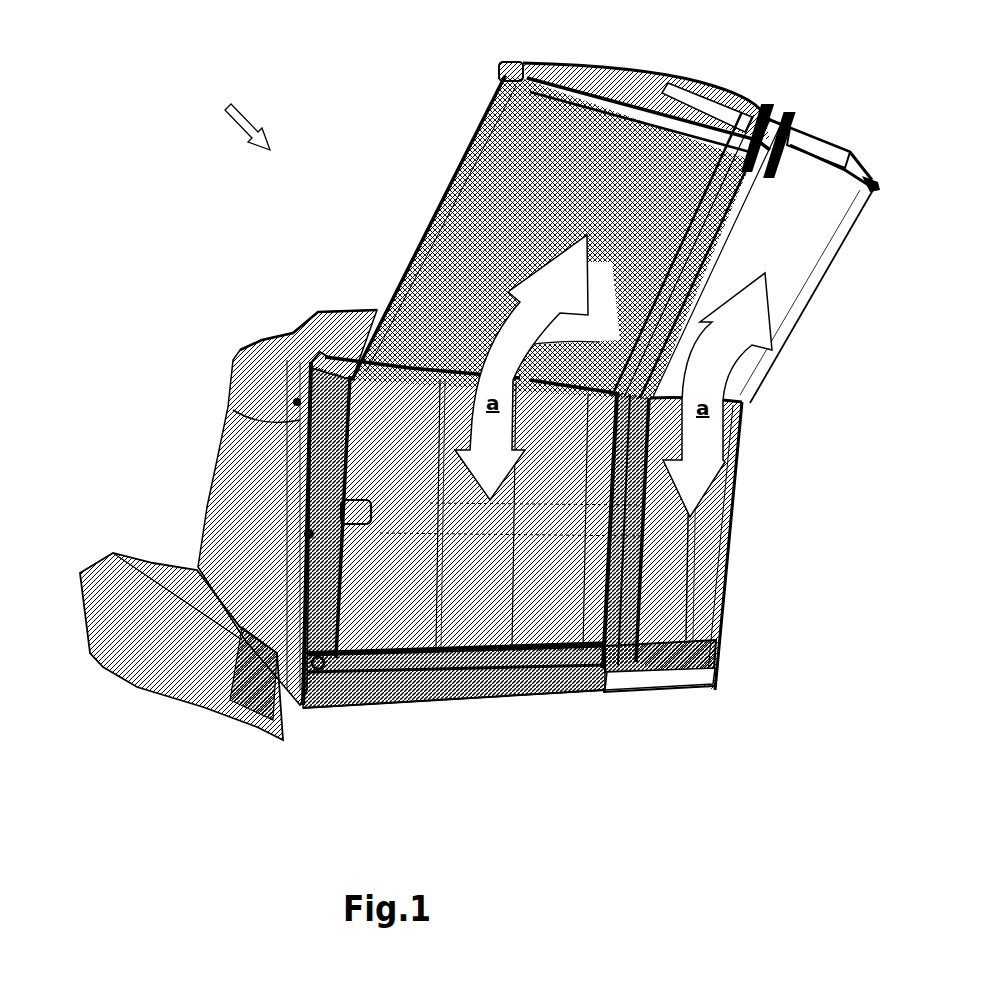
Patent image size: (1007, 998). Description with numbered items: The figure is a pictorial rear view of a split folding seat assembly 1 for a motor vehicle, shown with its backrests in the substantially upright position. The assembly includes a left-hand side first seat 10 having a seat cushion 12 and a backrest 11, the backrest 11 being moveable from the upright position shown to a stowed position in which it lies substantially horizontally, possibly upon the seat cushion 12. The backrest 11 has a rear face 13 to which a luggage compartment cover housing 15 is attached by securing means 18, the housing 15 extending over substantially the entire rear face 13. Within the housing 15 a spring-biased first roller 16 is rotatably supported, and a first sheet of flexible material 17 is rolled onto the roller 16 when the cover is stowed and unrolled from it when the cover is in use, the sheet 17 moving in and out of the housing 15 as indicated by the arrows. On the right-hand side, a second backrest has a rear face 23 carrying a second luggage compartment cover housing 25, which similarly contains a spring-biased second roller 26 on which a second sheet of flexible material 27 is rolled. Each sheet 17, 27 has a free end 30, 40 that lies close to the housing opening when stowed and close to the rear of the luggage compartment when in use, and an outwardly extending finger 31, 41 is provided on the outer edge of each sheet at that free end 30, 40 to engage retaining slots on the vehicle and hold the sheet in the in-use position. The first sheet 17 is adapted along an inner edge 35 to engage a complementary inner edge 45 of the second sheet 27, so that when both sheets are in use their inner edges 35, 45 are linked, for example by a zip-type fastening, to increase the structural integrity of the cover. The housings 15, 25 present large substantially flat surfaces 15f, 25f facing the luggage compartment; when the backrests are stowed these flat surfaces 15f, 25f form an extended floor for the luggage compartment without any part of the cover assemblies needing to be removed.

The split folding seat assembly 1 is at (238, 118).
The first seat 10 is at (226, 372).
The backrest 11 is at (220, 450).
The seat cushion 12 is at (113, 555).
The rear face 13 is at (190, 376).
The luggage compartment cover housing 15 is at (310, 690).
The substantially flat surface 15f is at (393, 672).
The first roller 16 is at (482, 564).
The first sheet of flexible material 17 is at (452, 180).
The securing means 18 is at (293, 353).
The rear face 23 is at (692, 687).
The luggage compartment cover housing 25 is at (640, 608).
The substantially flat surface 25f is at (700, 588).
The second roller 26 is at (683, 670).
The second sheet of flexible material 27 is at (805, 303).
The free end 30 is at (613, 63).
The outwardly extending finger 31 is at (499, 68).
The inner edge 35 is at (777, 113).
The free end 40 is at (812, 127).
The outwardly extending finger 41 is at (877, 193).
The inner edge 45 is at (788, 117).